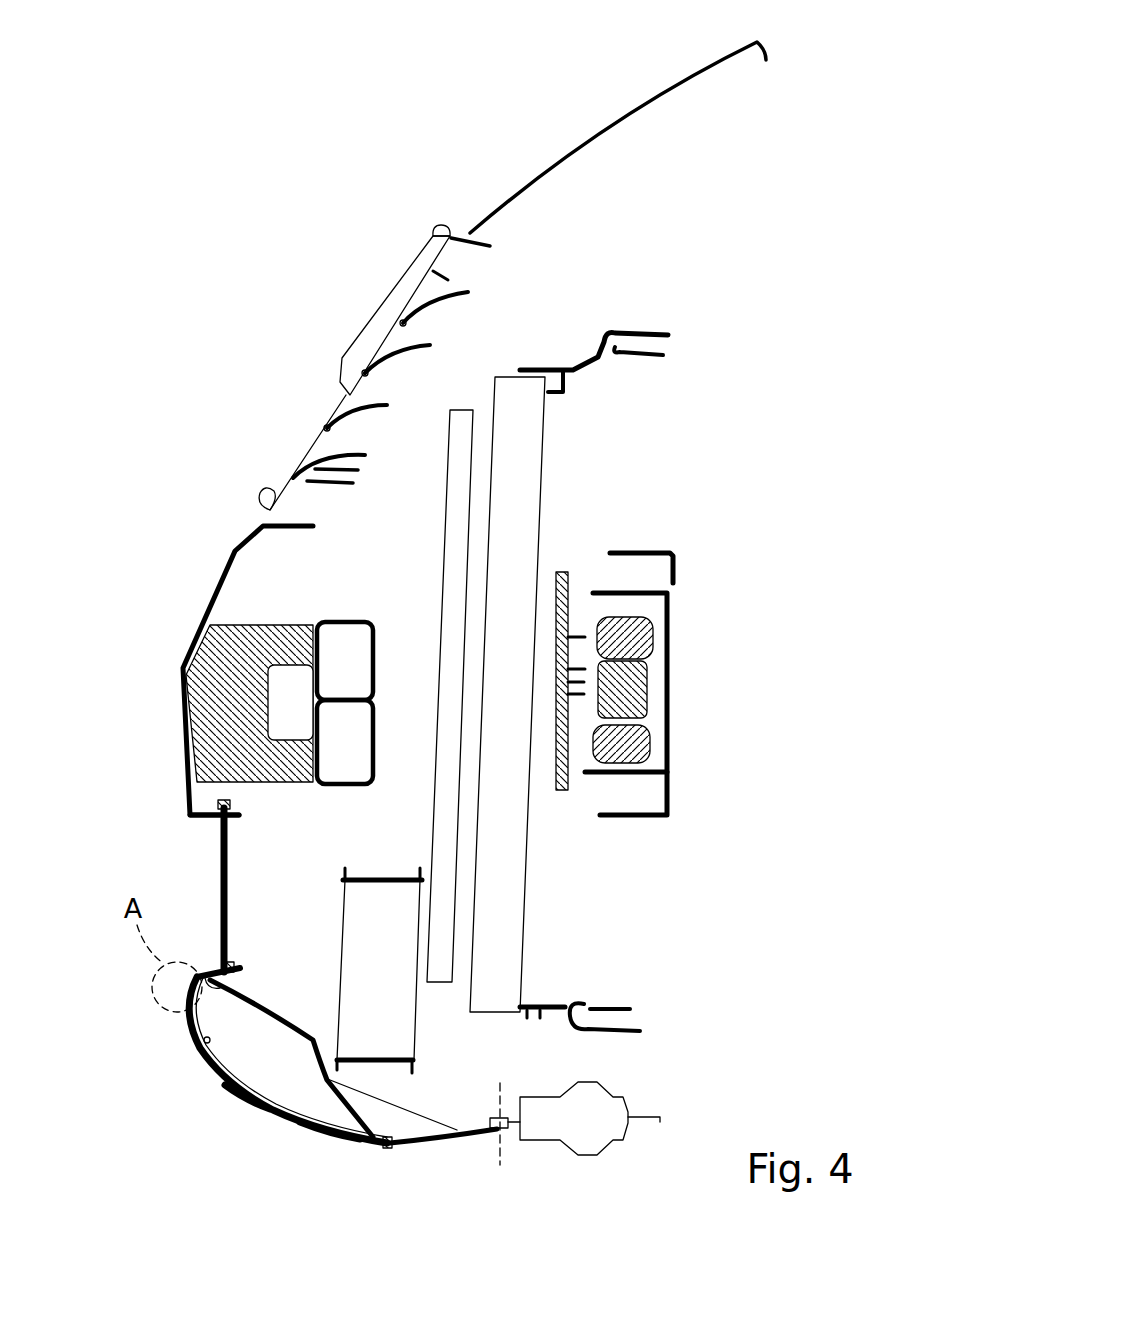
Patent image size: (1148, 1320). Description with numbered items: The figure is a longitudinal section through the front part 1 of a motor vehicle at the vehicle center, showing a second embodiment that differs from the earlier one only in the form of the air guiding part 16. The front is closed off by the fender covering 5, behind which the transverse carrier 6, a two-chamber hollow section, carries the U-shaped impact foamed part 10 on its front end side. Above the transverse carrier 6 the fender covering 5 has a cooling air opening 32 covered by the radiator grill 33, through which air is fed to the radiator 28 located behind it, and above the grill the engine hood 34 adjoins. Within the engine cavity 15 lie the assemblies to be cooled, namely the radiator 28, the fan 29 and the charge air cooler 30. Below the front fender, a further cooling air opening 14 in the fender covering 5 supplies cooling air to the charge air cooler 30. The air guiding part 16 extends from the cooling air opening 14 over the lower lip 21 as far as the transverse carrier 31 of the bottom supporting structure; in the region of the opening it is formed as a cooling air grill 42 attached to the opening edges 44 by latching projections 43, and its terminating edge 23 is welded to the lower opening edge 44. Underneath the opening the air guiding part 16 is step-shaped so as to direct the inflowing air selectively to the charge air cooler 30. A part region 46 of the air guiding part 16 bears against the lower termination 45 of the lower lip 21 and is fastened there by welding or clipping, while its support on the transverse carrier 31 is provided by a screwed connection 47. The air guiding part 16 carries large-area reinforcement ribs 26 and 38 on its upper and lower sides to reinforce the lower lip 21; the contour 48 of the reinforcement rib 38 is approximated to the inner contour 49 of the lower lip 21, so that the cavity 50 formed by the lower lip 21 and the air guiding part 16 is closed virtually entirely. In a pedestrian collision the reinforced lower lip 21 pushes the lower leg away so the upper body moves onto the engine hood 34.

The front part 1 is at (233, 307).
The fender covering 5 is at (226, 576).
The transverse carrier 6 is at (362, 757).
The impact foamed part 10 is at (218, 685).
The cooling air opening 14 is at (210, 873).
The engine cavity 15 is at (722, 600).
The air guiding part 16 is at (280, 1012).
The lower lip 21 is at (230, 1080).
The terminating edge 23 is at (210, 983).
The reinforcement rib 26 is at (417, 1128).
The radiator 28 is at (520, 492).
The fan 29 is at (627, 692).
The charge air cooler 30 is at (366, 976).
The transverse carrier 31 is at (630, 1094).
The cooling air opening 32 is at (322, 445).
The radiator grill 33 is at (373, 315).
The engine hood 34 is at (610, 127).
The reinforcement rib 38 is at (290, 1087).
The cooling air grill 42 is at (229, 848).
The latching projections 43 is at (233, 806).
The opening edges 44 is at (217, 818).
The lower termination 45 is at (390, 1146).
The part region 46 is at (376, 1132).
The screwed connection 47 is at (503, 1137).
The contour 48 is at (257, 1095).
The inner contour 49 is at (198, 1040).
The cavity 50 is at (328, 1125).